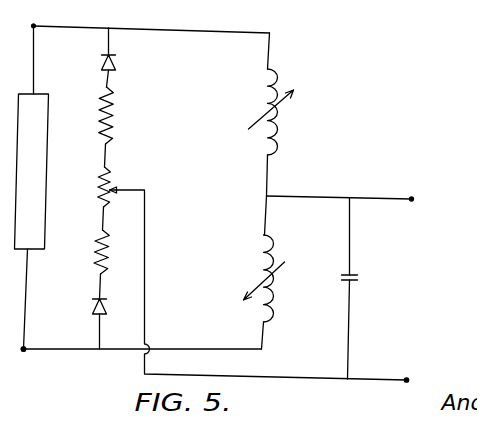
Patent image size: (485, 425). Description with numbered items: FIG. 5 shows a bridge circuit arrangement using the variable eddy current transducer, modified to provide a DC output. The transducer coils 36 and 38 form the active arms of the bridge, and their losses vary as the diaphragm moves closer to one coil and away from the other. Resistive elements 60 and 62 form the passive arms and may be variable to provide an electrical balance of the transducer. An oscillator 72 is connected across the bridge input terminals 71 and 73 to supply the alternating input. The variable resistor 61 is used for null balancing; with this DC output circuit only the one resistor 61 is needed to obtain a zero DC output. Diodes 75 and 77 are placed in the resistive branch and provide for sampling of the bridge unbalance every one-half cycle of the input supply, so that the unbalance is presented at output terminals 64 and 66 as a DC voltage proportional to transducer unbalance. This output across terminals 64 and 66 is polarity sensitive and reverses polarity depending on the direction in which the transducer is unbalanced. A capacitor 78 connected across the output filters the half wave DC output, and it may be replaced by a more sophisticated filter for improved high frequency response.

The bridge input terminal 71 is at (37, 12).
The oscillator 72 is at (48, 100).
The bridge input terminal 73 is at (22, 349).
The diode 75 is at (112, 55).
The resistive element 60 is at (112, 127).
The variable resistor 61 is at (95, 180).
The resistive element 62 is at (93, 257).
The diode 77 is at (90, 310).
The transducer coil 36 is at (276, 128).
The transducer coil 38 is at (272, 300).
The output terminal 64 is at (411, 195).
The output terminal 66 is at (416, 360).
The capacitor 78 is at (350, 273).